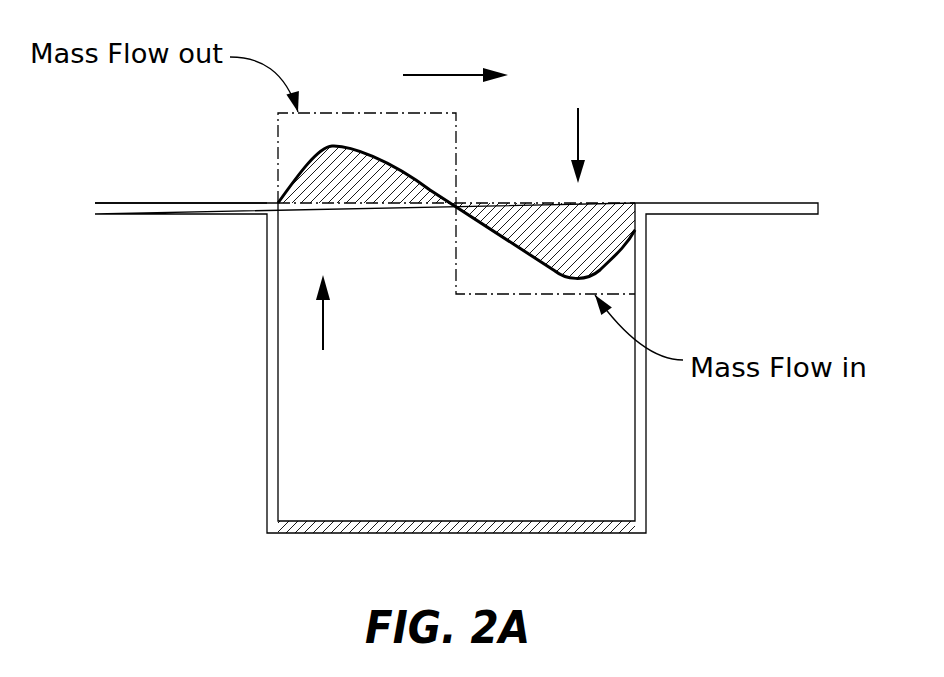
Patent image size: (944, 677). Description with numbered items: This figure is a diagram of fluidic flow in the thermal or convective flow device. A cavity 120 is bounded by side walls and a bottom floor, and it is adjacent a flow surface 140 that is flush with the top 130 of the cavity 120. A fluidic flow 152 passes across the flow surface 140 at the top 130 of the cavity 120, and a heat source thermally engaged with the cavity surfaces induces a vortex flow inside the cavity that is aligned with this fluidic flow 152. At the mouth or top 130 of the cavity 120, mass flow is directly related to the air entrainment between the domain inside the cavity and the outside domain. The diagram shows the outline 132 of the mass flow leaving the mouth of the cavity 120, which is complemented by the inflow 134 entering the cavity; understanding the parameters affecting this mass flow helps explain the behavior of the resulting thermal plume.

The cavity 120 is at (484, 499).
The top of the cavity 130 is at (640, 173).
The outline of the mass flow 132 is at (325, 322).
The inflow 134 is at (578, 130).
The flow surface 140 is at (212, 173).
The fluidic flow 152 is at (442, 72).